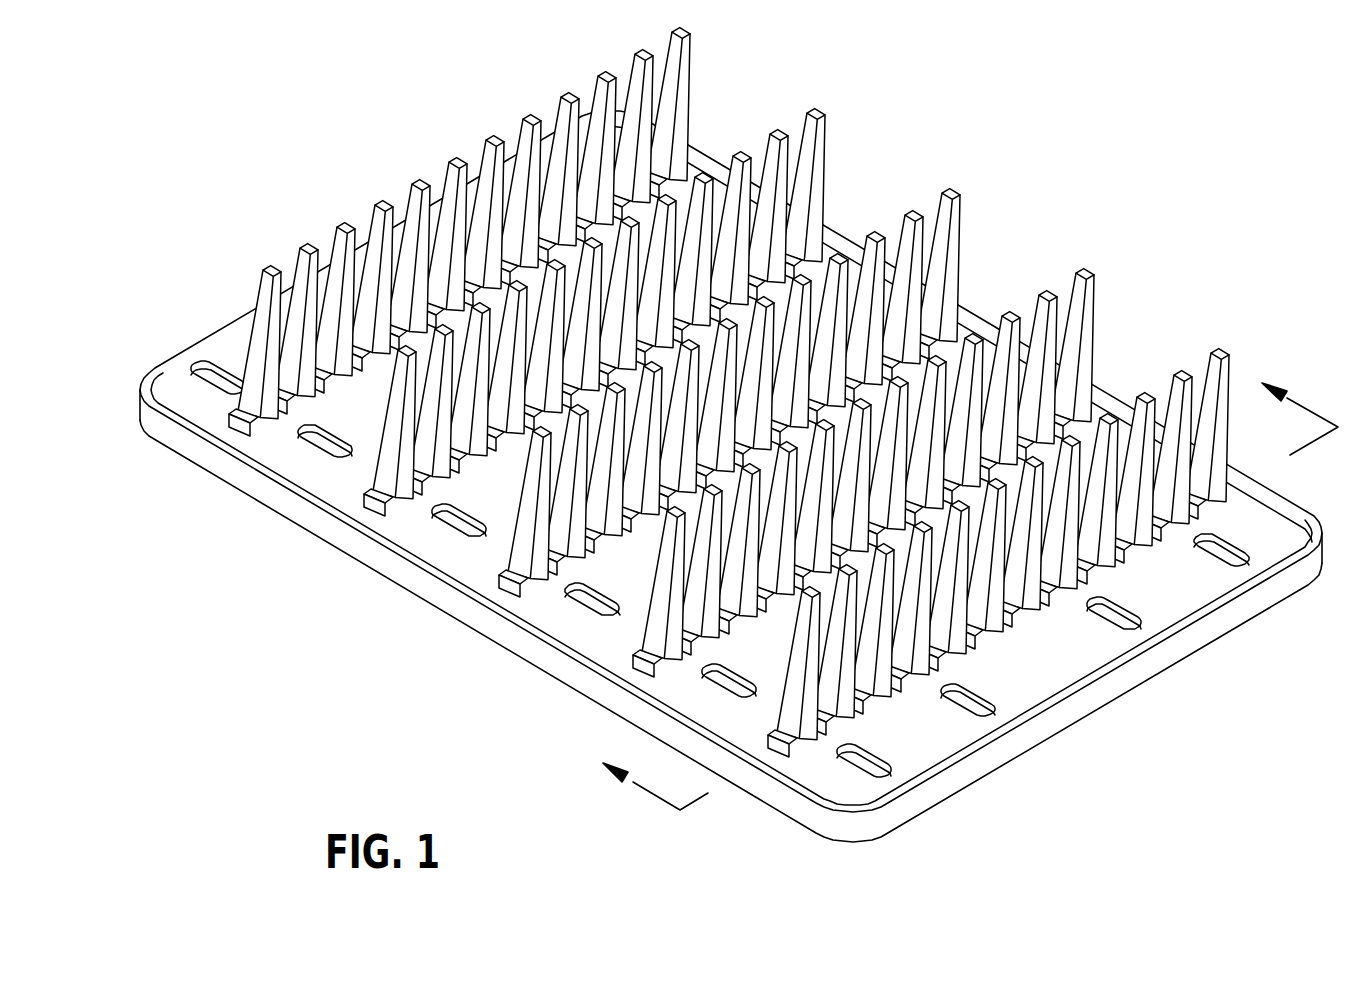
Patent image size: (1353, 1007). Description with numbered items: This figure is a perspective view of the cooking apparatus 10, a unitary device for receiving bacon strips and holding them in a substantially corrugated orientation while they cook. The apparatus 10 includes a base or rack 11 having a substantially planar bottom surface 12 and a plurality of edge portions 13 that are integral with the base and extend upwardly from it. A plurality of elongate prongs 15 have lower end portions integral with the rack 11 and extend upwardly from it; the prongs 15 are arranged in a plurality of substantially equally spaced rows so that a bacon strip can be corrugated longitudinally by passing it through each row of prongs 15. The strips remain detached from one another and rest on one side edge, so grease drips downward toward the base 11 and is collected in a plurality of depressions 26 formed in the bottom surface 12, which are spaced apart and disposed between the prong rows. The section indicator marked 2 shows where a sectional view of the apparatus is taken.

The cooking apparatus 10 is at (743, 432).
The base or rack 11 is at (1177, 657).
The bottom surface 12 is at (1038, 683).
The edge portions 13 is at (759, 504).
The elongate prongs 15 is at (962, 206).
The depressions 26 is at (440, 522).
The section line 2- 2 is at (955, 570).